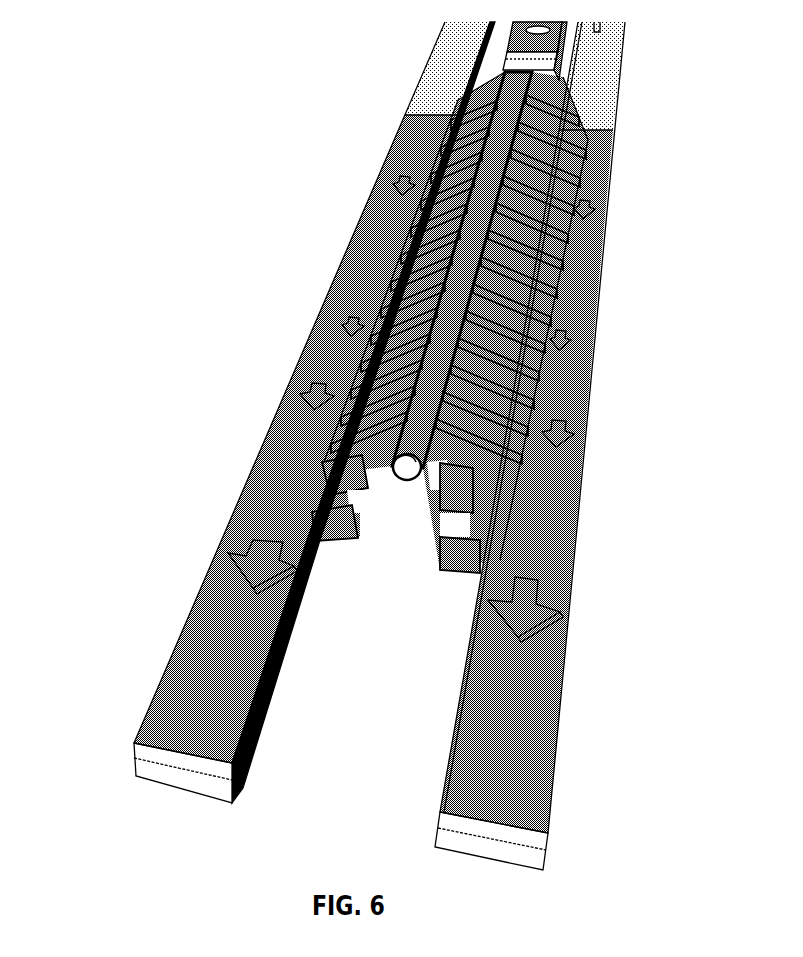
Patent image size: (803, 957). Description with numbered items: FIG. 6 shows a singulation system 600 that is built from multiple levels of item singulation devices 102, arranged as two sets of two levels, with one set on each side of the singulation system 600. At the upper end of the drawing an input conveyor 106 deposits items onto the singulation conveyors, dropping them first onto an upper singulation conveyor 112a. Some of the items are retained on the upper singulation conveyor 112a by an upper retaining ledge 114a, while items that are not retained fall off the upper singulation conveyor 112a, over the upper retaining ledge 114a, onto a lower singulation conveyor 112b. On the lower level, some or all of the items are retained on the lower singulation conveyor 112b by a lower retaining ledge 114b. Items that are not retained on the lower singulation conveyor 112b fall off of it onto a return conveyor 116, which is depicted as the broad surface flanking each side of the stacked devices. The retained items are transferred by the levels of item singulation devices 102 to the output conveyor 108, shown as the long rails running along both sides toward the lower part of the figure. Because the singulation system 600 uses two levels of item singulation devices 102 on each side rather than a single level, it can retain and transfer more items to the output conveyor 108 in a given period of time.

The singulation system 600 is at (146, 130).
The item singulation device 102 is at (345, 478).
The input conveyor 106 is at (542, 43).
The output conveyor 108 is at (207, 652).
The upper singulation conveyor 112a is at (397, 383).
The lower singulation conveyor 112b is at (355, 420).
The upper retaining ledge 114a is at (415, 218).
The lower retaining ledge 114b is at (387, 277).
The return conveyor 116 is at (418, 142).